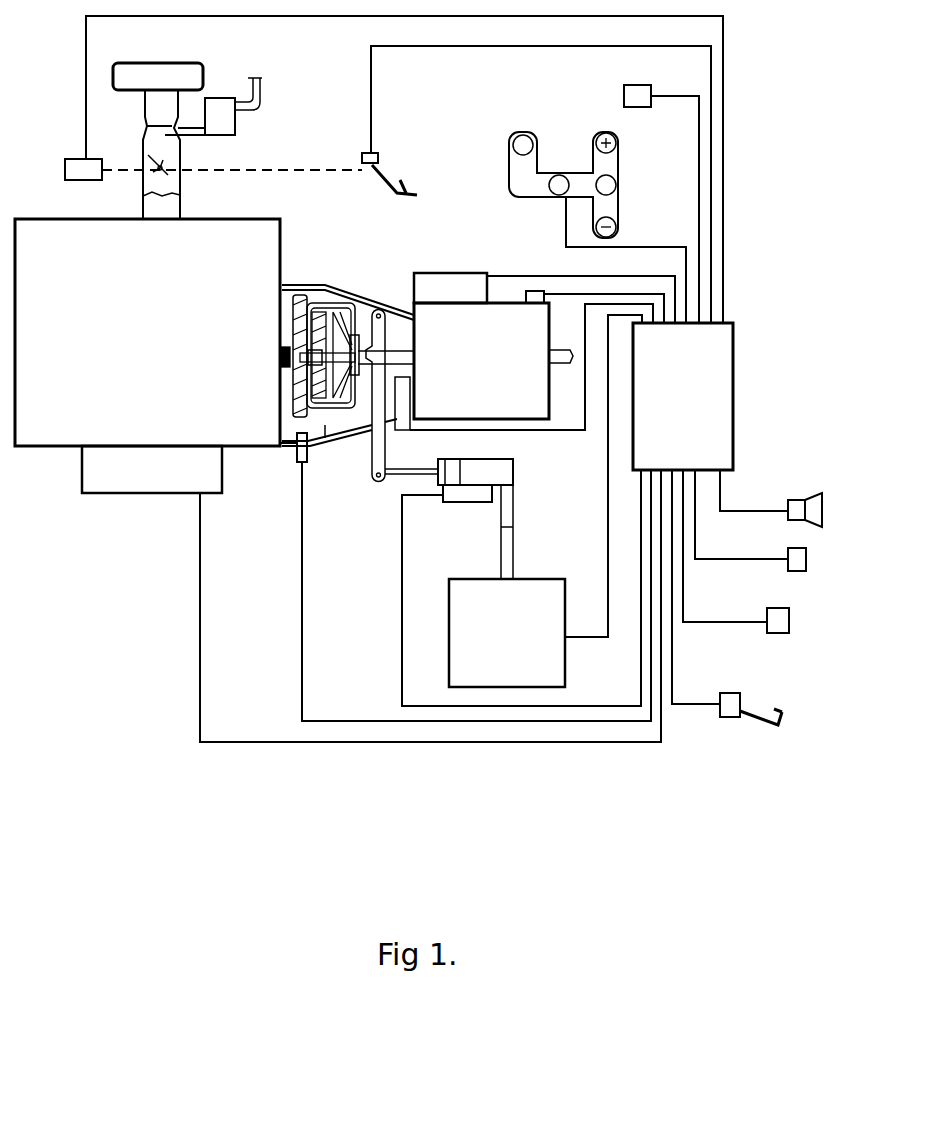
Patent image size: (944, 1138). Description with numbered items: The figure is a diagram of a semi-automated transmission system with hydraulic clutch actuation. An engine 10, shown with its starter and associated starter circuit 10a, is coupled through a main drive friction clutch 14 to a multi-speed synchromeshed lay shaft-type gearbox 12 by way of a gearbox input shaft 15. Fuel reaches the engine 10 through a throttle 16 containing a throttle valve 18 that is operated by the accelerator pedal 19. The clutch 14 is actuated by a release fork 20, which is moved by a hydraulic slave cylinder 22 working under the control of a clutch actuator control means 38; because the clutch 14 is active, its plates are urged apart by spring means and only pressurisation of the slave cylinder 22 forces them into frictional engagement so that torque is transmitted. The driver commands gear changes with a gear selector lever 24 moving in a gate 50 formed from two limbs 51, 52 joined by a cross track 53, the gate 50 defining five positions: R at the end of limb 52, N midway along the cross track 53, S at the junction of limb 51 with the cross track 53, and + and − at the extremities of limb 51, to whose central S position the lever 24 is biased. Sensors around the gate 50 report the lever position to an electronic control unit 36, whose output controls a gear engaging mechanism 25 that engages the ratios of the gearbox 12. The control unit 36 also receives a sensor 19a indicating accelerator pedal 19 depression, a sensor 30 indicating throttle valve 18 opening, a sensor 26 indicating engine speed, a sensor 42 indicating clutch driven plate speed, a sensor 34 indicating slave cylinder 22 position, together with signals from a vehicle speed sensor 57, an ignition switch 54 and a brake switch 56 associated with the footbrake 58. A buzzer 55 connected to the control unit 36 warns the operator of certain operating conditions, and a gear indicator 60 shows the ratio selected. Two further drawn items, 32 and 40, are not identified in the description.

The engine 10 is at (147, 332).
The starter and associated starter circuit 10a is at (152, 469).
The gearbox 12 is at (493, 361).
The main drive friction clutch 14 is at (309, 274).
The gearbox input shaft 15 is at (410, 357).
The throttle 16 is at (191, 184).
The throttle valve 18 is at (165, 180).
The accelerator pedal 19 is at (380, 175).
The sensor 19a is at (370, 150).
The release fork 20 is at (375, 450).
The hydraulic slave cylinder 22 is at (495, 466).
The gear selector lever 24 is at (556, 176).
The gear engaging mechanism 25 is at (450, 289).
The sensor 26 is at (297, 452).
The sensor 30 is at (65, 170).
The transmission output sensor 32 is at (535, 291).
The sensor 34 is at (470, 502).
The electronic control unit 36 is at (683, 396).
The clutch actuator control means 38 is at (507, 633).
The clutch 40 is at (335, 300).
The sensor 42 is at (410, 392).
The gate 50 is at (502, 175).
The limb 51 is at (618, 158).
The limb 52 is at (509, 165).
The cross track 53 is at (540, 197).
The ignition switch 54 is at (777, 608).
The buzzer 55 is at (796, 500).
The brake switch 56 is at (728, 694).
The vehicle speed sensor 57 is at (795, 549).
The footbrake 58 is at (762, 728).
The gear indicator 60 is at (630, 96).